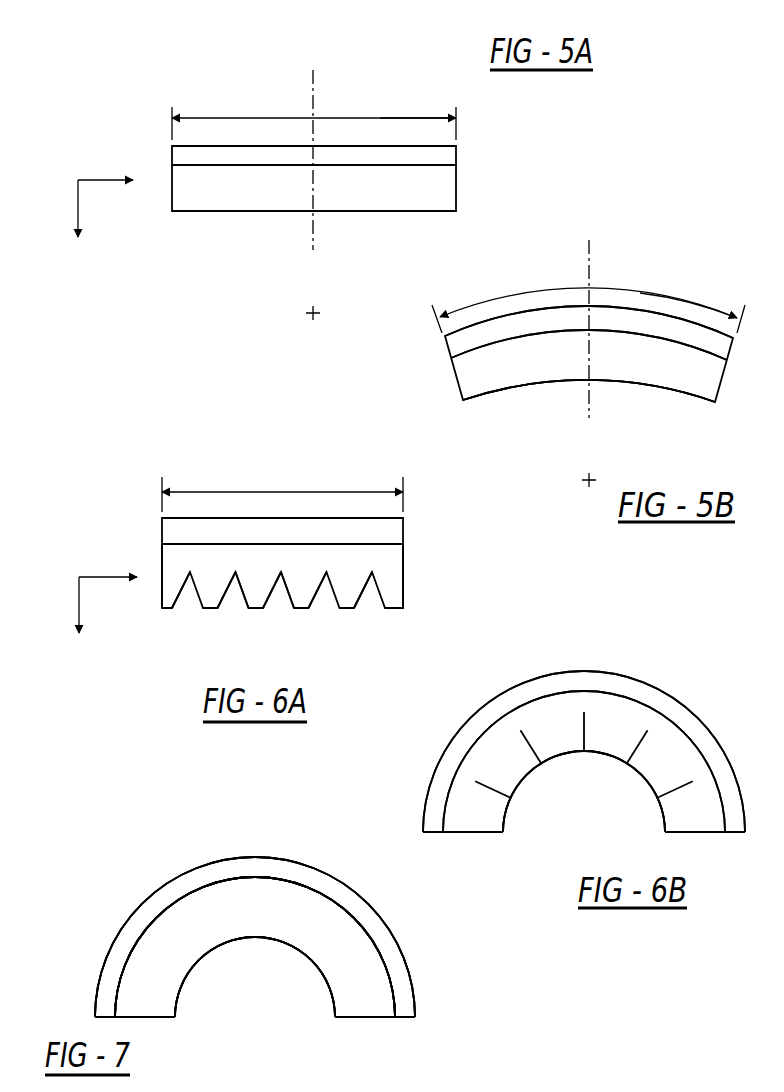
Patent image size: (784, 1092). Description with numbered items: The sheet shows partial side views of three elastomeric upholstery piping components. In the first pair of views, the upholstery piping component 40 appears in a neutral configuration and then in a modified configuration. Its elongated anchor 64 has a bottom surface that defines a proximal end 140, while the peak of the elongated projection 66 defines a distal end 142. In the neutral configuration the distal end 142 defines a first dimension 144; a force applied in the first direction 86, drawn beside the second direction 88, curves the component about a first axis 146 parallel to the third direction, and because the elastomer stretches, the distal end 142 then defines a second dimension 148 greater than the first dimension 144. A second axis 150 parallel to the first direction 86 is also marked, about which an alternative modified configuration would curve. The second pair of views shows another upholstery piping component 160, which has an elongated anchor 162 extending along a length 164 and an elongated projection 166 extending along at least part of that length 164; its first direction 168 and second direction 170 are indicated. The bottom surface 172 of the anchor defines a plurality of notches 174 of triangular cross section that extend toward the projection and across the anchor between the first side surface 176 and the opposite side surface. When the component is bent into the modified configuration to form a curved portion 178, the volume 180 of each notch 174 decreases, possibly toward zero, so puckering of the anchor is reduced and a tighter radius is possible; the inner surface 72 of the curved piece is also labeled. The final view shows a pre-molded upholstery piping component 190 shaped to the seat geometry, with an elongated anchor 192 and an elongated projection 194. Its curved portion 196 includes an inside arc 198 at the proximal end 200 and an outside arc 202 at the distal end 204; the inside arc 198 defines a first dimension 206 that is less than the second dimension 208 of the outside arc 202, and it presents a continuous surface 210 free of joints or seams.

In FIG. 5A, the upholstery piping component 40 is at (127, 100).
In FIG. 5B, the upholstery piping component 40 is at (547, 263).
In FIG. 5A, the elongated anchor 64 is at (188, 193).
In FIG. 5B, the elongated anchor 64 is at (467, 369).
In FIG. 5A, the elongated projection 66 is at (185, 155).
In FIG. 5B, the elongated projection 66 is at (452, 343).
In FIG. 6B, the inner surface 72 is at (507, 813).
In FIG. 5A, the first direction 86 is at (76, 202).
In FIG. 5A, the second direction 88 is at (87, 180).
In FIG. 5A, the proximal end 140 is at (208, 213).
In FIG. 5B, the proximal end 140 is at (500, 390).
In FIG. 5A, the distal end 142 is at (228, 145).
In FIG. 5B, the distal end 142 is at (497, 317).
In FIG. 5A, the first dimension 144 is at (378, 118).
In FIG. 5A, the first axis 146 is at (310, 312).
In FIG. 5B, the first axis 146 is at (587, 480).
In FIG. 5B, the second dimension 148 is at (682, 298).
In FIG. 5A, the second axis 150 is at (313, 92).
In FIG. 5B, the second axis 150 is at (589, 262).
In FIG. 6A, the upholstery piping component 160 is at (133, 472).
In FIG. 6B, the upholstery piping component 160 is at (568, 643).
In FIG. 6A, the elongated anchor 162 is at (175, 568).
In FIG. 6B, the elongated anchor 162 is at (475, 825).
In FIG. 6A, the length 164 is at (263, 492).
In FIG. 6A, the elongated projection 166 is at (175, 528).
In FIG. 6B, the elongated projection 166 is at (472, 728).
In FIG. 6A, the first direction 168 is at (79, 593).
In FIG. 6A, the second direction 170 is at (88, 570).
In FIG. 6A, the bottom surface 172 is at (167, 615).
In FIG. 6A, the notches 174 is at (197, 608).
In FIG. 6A, the first side surface 176 is at (245, 568).
In FIG. 6B, the first side surface 176 is at (530, 732).
In FIG. 6B, the curved portion 178 is at (620, 682).
In FIG. 6A, the volume 180 is at (187, 597).
In FIG. 7, the upholstery piping component 190 is at (98, 867).
In FIG. 7, the elongated anchor 192 is at (355, 970).
In FIG. 7, the elongated projection 194 is at (377, 937).
In FIG. 7, the curved portion 196 is at (248, 872).
In FIG. 7, the inside arc 198 is at (212, 948).
In FIG. 7, the proximal end 200 is at (268, 940).
In FIG. 7, the outside arc 202 is at (148, 893).
In FIG. 7, the distal end 204 is at (195, 863).
In FIG. 7, the first dimension 206 is at (333, 1007).
In FIG. 7, the second dimension 208 is at (417, 1003).
In FIG. 7, the continuous surface 210 is at (175, 1003).